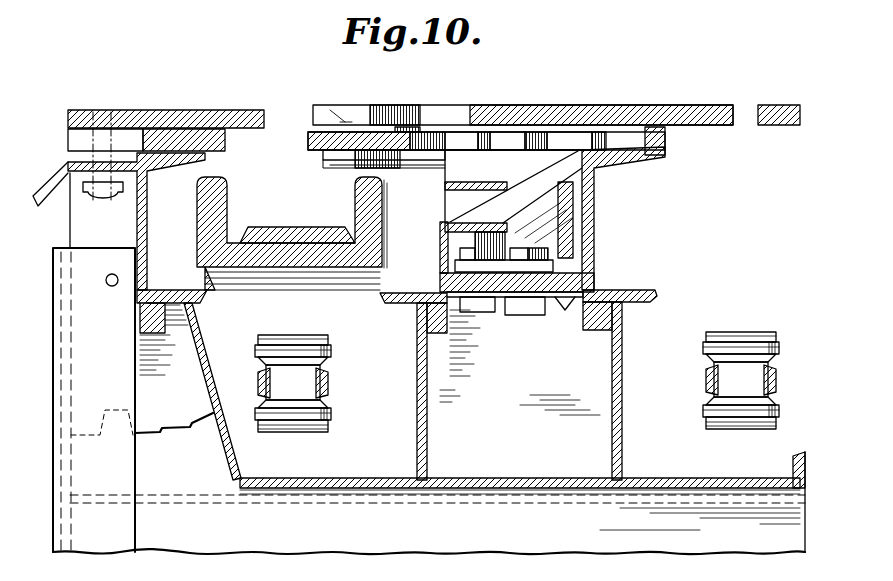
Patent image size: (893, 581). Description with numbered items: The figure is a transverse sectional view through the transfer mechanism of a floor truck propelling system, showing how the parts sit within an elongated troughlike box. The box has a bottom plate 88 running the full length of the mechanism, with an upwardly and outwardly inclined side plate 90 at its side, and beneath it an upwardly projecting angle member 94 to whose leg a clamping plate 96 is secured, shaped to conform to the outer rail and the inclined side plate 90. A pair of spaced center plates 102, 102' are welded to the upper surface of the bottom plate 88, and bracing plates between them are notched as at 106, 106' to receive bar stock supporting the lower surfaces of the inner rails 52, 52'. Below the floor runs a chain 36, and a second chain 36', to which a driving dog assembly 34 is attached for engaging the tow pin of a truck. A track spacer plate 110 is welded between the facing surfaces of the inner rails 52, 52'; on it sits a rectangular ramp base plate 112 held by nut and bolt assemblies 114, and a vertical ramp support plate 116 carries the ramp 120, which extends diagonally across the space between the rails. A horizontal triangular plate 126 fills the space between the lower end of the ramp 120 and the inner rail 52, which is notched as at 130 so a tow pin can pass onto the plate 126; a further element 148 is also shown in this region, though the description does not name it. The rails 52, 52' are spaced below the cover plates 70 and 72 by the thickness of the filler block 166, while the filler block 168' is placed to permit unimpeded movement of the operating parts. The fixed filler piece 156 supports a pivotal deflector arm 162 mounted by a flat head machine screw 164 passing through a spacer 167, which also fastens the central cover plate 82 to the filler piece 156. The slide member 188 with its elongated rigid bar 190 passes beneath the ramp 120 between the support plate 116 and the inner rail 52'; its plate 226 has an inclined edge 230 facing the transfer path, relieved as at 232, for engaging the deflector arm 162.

The driving dog assembly 34 is at (284, 226).
The chain 36 is at (317, 383).
The chain 36' is at (713, 380).
The inner rail 52 is at (257, 228).
The inner rail 52' is at (620, 281).
The cover plate 70 is at (145, 110).
The cover plate 72 is at (775, 105).
The central cover plate 82 is at (622, 105).
The bottom plate 88 is at (503, 488).
The side plate 90 is at (198, 370).
The angle member 94 is at (106, 358).
The clamping plate 96 is at (178, 420).
The center plate 102 is at (447, 391).
The center plate 102' is at (592, 391).
The notch 106 is at (450, 331).
The notch 106' is at (586, 331).
The track spacer plate 110 is at (535, 315).
The ramp base plate 112 is at (555, 268).
The nut and bolt assembly 114 is at (490, 312).
The ramp support plate 116 is at (504, 244).
The ramp 120 is at (545, 162).
The triangular plate 126 is at (470, 223).
The notch 130 is at (445, 210).
The shelf plate 148 is at (462, 182).
The filler piece 156 is at (325, 158).
The deflector arm 162 is at (308, 140).
The flat head machine screw 164 is at (365, 105).
The filler block 166 is at (225, 138).
The spacer 167 is at (408, 128).
The filler block 168' is at (684, 141).
The slide member 188 is at (455, 165).
The rigid bar 190 is at (574, 210).
The plate 226 is at (498, 132).
The inclined edge 230 is at (513, 132).
The relieved portion 232 is at (562, 132).